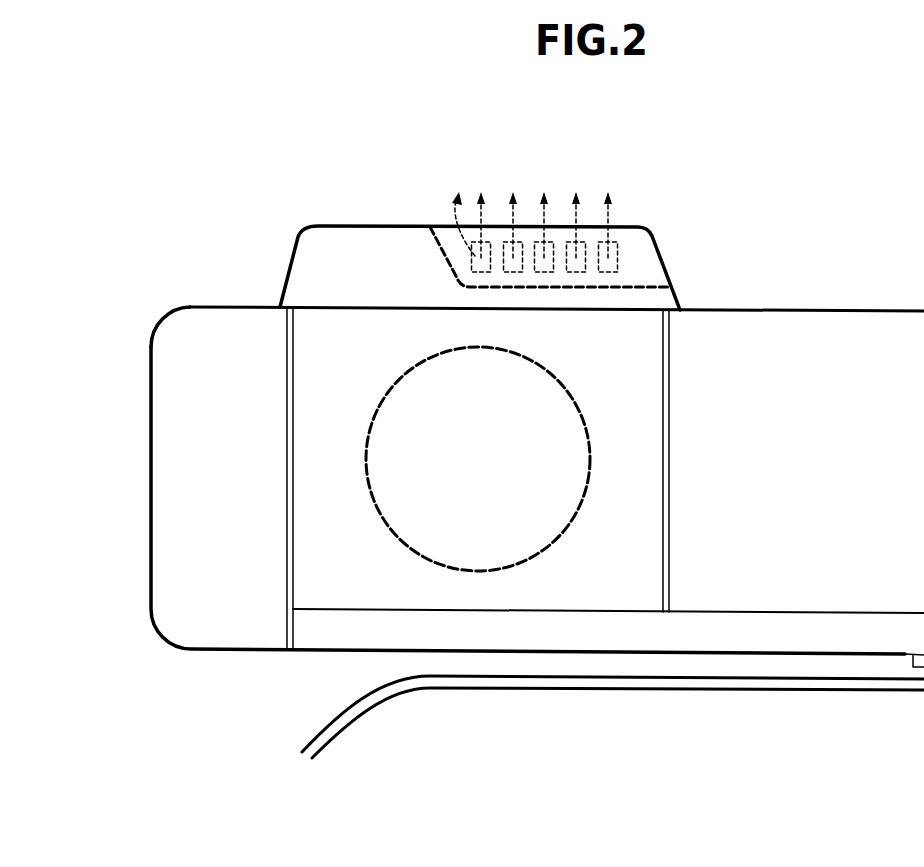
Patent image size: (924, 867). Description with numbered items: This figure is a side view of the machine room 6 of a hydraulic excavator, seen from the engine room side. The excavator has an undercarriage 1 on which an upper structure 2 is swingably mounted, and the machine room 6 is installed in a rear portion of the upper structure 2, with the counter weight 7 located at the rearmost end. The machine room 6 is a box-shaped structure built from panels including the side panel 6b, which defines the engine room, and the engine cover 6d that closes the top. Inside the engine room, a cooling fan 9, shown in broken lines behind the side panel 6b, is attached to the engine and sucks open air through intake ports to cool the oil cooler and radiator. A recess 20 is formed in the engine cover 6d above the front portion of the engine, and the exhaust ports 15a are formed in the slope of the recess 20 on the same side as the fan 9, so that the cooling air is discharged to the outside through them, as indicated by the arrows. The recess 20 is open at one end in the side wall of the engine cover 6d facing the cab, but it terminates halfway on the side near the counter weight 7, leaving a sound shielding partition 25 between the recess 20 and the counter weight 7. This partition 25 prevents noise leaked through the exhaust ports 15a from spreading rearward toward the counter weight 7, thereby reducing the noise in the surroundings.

The undercarriage 1 is at (294, 747).
The upper structure 2 is at (257, 240).
The machine room 6 is at (647, 357).
The side panel 6b is at (320, 585).
The engine cover 6d is at (358, 225).
The counter weight 7 is at (212, 313).
The cooling fan 9 is at (572, 397).
The exhaust ports 15a is at (616, 258).
The recess 20 is at (668, 280).
The sound shielding partition 25 is at (447, 243).